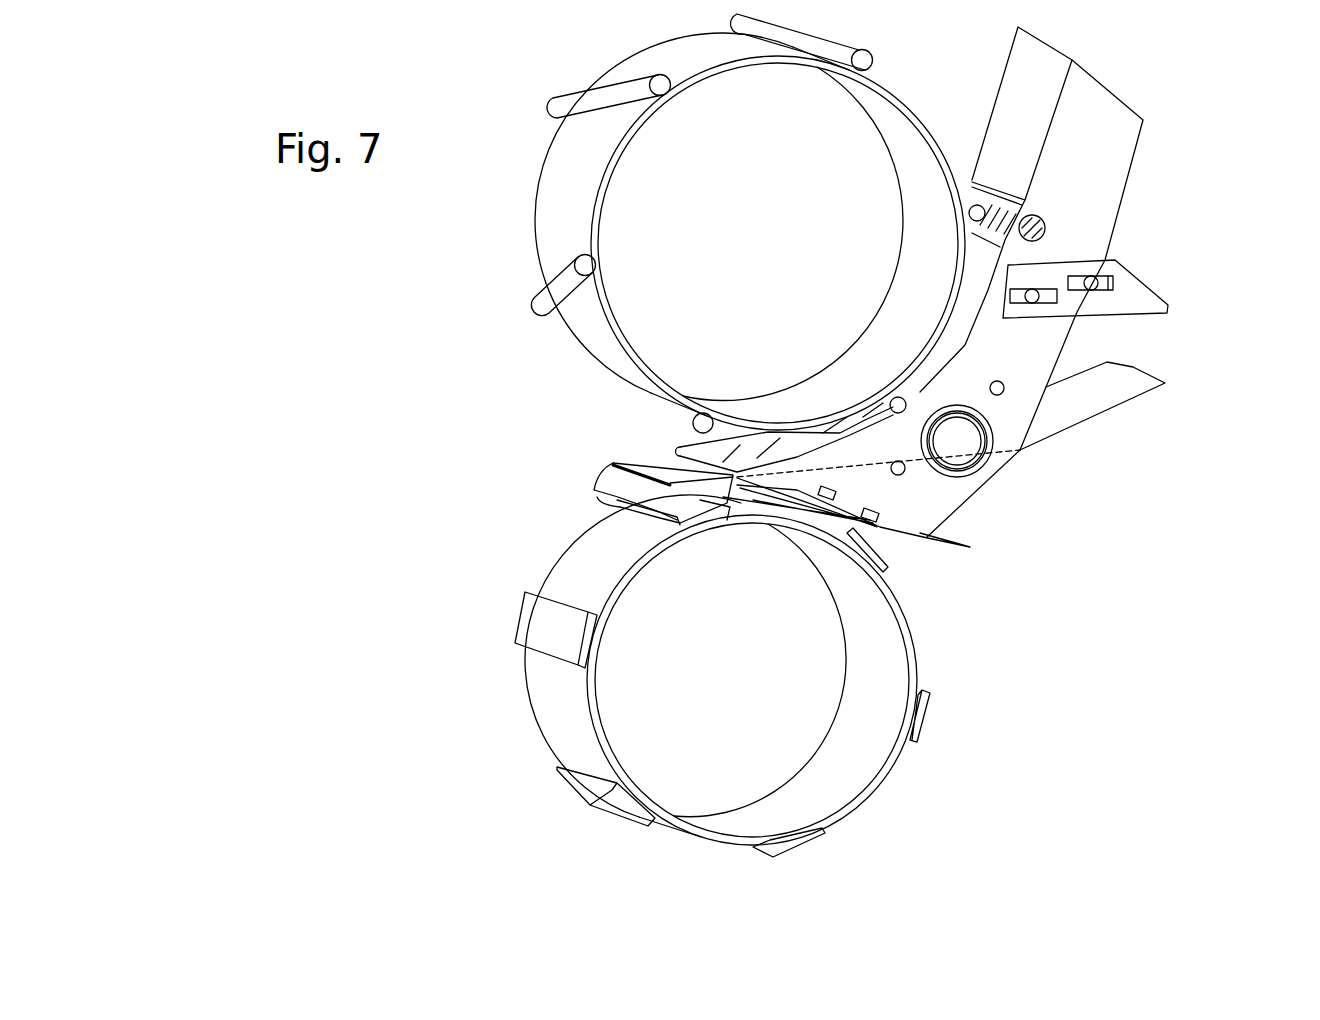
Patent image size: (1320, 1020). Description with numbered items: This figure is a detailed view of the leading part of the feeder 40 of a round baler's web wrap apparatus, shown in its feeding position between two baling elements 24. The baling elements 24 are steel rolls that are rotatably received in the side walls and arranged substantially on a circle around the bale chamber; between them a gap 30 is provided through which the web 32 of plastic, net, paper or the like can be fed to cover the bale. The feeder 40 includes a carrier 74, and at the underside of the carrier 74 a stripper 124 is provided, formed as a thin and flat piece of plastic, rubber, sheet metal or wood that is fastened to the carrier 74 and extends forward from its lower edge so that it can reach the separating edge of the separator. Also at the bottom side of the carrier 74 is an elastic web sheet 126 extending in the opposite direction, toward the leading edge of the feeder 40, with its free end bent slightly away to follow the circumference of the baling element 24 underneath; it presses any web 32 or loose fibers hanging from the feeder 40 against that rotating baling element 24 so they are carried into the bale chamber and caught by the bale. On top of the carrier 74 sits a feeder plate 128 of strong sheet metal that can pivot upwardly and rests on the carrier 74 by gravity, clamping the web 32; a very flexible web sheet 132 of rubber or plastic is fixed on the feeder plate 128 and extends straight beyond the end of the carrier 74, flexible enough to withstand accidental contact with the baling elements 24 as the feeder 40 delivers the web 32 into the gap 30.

The baling element 24 is at (527, 228).
The gap 30 is at (667, 433).
The web 32 is at (1020, 450).
The feeder 40 is at (1140, 180).
The carrier 74 is at (1063, 403).
The stripper 124 is at (967, 527).
The web sheet 126 is at (765, 497).
The feeder plate 128 is at (970, 300).
The web sheet 132 is at (660, 460).